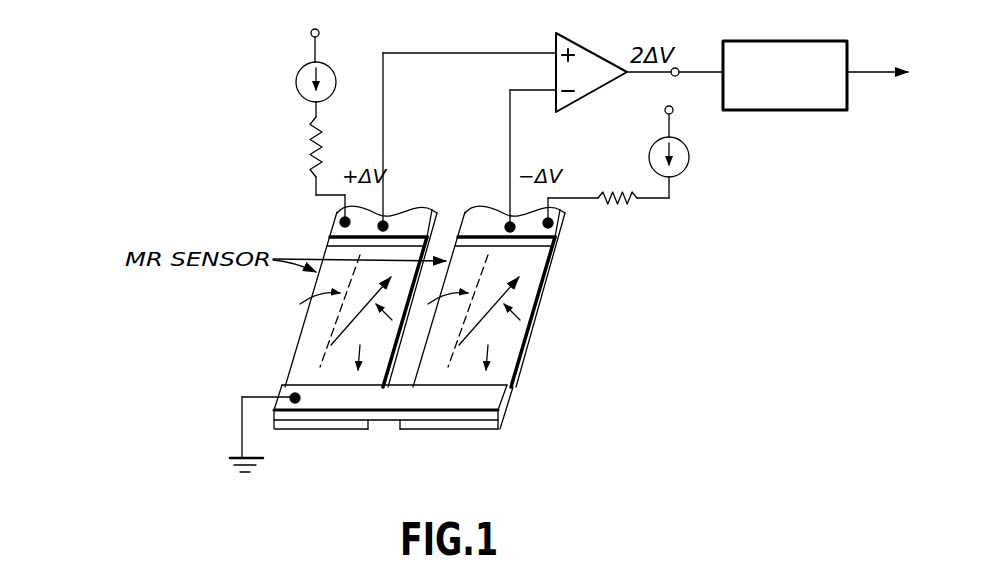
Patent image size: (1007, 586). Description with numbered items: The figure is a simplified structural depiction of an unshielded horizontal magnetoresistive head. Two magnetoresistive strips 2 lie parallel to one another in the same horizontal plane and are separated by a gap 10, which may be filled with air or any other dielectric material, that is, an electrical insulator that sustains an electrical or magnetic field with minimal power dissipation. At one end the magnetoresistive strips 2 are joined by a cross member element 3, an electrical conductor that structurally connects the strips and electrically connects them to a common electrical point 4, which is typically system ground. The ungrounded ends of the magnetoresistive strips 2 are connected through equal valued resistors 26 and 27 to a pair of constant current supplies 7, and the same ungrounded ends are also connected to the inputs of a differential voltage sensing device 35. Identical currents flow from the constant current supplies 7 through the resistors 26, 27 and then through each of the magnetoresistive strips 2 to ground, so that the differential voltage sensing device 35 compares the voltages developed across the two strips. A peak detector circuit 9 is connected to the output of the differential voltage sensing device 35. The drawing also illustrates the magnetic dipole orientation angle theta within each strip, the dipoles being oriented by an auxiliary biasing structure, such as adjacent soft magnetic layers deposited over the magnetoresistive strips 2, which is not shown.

The magnetoresistive strips 2 is at (298, 358).
The cross member element 3 is at (497, 401).
The common electrical point 4 is at (262, 457).
The constant current supplies 7 is at (295, 82).
The peak detector circuit 9 is at (775, 122).
The gap 10 is at (427, 274).
The resistor 26 is at (308, 145).
The resistor 27 is at (625, 206).
The differential voltage sensing device 35 is at (578, 46).